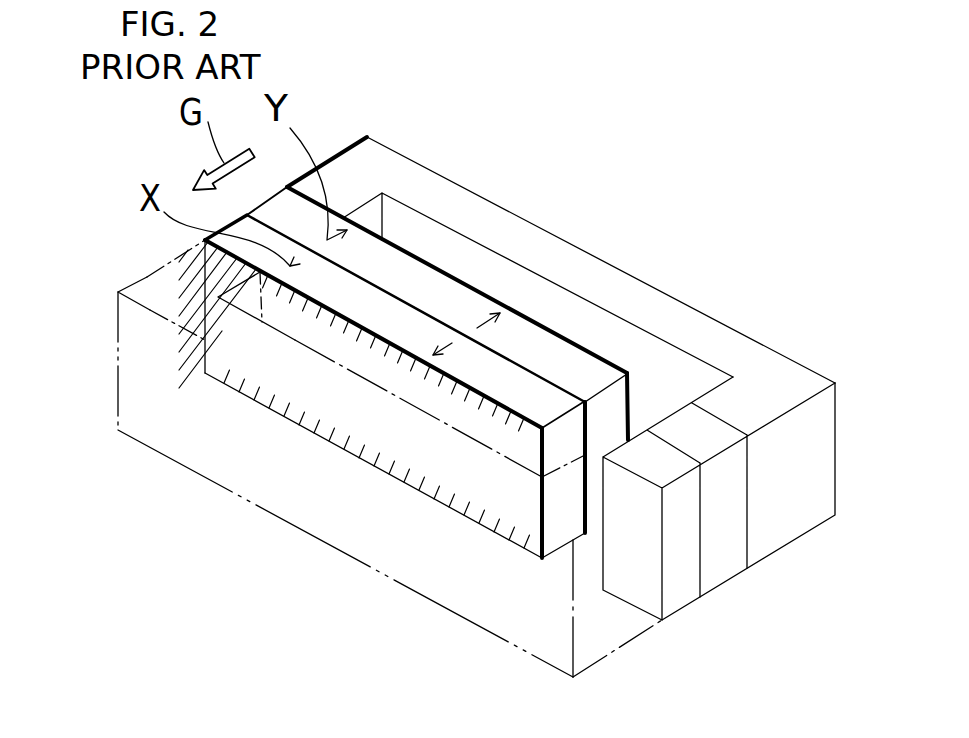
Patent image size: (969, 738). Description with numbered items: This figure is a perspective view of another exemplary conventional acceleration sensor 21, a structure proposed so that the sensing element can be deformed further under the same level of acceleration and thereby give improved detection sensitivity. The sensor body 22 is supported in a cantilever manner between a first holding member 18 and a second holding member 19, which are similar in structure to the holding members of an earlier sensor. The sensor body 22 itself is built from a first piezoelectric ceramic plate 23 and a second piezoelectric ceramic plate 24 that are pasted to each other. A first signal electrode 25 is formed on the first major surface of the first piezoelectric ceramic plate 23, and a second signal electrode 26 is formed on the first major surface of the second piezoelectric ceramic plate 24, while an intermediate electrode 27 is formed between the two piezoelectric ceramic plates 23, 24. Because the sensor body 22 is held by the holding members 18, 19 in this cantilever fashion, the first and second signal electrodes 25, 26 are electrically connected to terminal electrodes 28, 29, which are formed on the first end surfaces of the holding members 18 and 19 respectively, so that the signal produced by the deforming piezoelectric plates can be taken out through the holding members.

The first holding member 18 is at (137, 395).
The second holding member 19 is at (528, 221).
The acceleration sensor 21 is at (402, 141).
The sensor body 22 is at (557, 324).
The first piezoelectric ceramic plate 23 is at (372, 311).
The second piezoelectric ceramic plate 24 is at (447, 298).
The first signal electrode 25 is at (353, 456).
The second signal electrode 26 is at (627, 364).
The intermediate electrode 27 is at (604, 362).
The terminal electrode 28 is at (186, 262).
The terminal electrode 29 is at (348, 148).